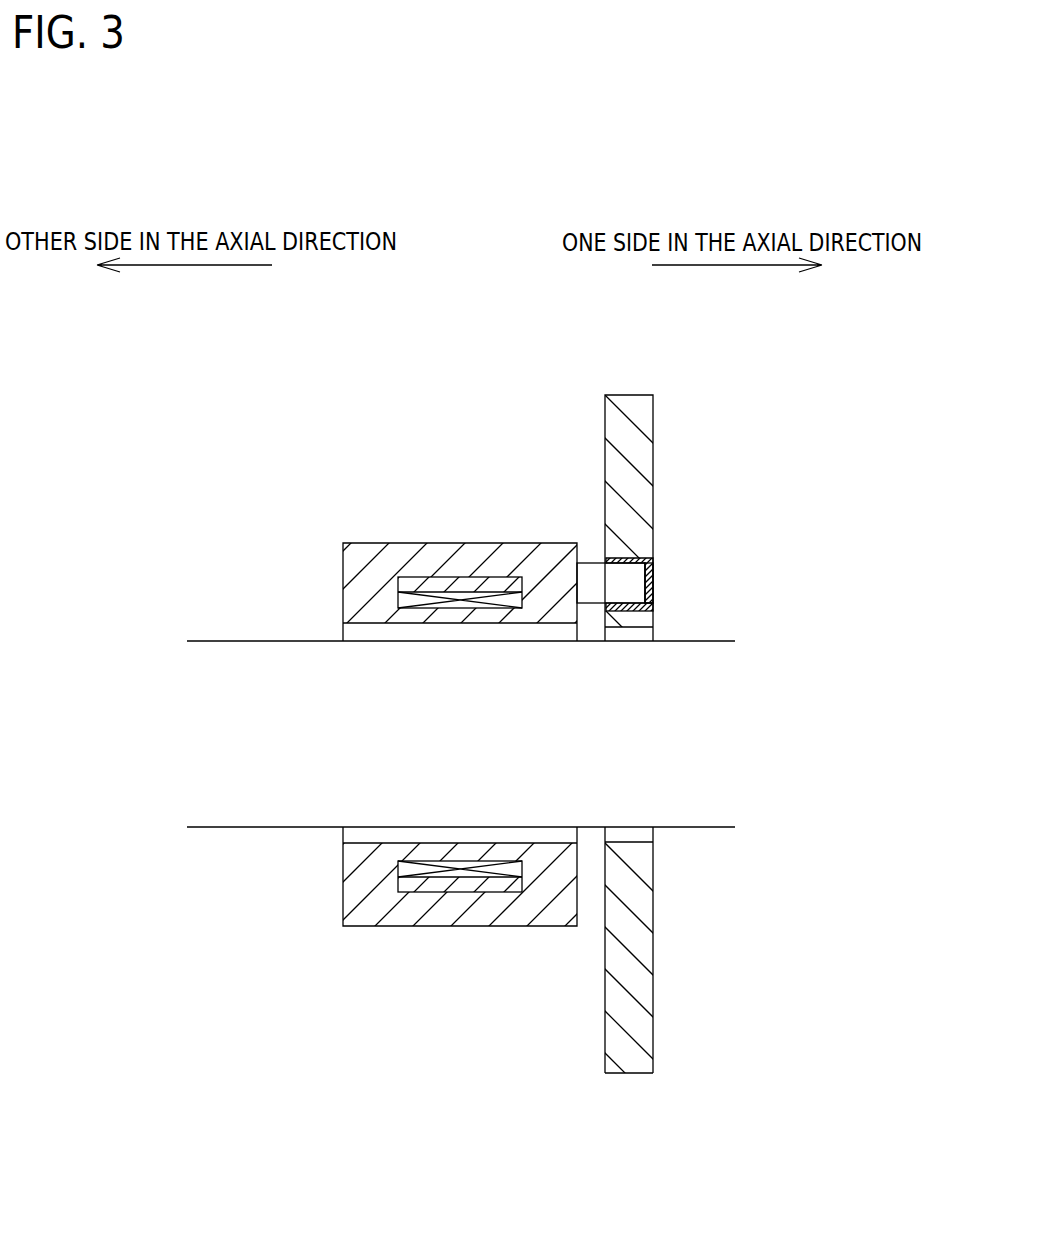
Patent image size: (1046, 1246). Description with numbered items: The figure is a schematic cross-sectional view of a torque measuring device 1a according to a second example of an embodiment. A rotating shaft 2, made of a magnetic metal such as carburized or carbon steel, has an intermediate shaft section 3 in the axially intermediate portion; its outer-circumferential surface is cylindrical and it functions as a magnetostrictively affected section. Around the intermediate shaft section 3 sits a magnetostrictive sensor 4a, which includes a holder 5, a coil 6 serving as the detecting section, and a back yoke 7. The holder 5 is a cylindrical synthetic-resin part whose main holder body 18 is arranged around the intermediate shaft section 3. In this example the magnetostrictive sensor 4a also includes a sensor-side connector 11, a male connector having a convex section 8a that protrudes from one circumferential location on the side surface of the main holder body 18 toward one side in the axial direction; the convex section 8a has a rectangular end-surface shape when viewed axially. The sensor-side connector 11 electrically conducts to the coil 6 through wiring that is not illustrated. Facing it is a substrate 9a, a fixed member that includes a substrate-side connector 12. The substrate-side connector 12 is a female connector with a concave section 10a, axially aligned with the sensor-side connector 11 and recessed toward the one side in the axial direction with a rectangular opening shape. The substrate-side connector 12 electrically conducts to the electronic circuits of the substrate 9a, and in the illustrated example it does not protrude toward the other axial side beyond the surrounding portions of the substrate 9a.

The torque measuring device 1a is at (496, 438).
The rotating shaft 2 is at (272, 657).
The intermediate shaft section 3 is at (307, 808).
The magnetostrictive sensor 4a is at (377, 529).
The holder 5 is at (445, 915).
The coil 6 is at (422, 602).
The back yoke 7 is at (450, 583).
The convex section 8a is at (617, 560).
The substrate 9a is at (664, 410).
The concave section 10a is at (651, 568).
The sensor-side connector 11 is at (595, 582).
The substrate-side connector 12 is at (640, 620).
The main holder body 18 is at (522, 915).